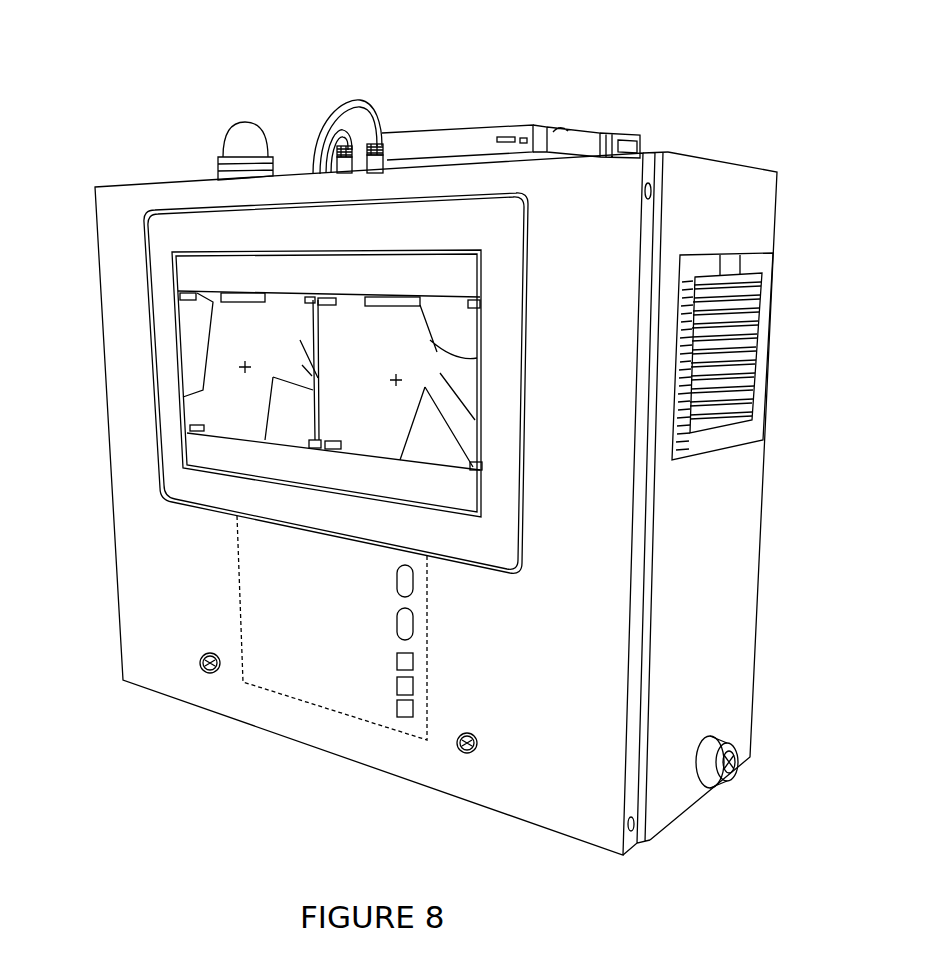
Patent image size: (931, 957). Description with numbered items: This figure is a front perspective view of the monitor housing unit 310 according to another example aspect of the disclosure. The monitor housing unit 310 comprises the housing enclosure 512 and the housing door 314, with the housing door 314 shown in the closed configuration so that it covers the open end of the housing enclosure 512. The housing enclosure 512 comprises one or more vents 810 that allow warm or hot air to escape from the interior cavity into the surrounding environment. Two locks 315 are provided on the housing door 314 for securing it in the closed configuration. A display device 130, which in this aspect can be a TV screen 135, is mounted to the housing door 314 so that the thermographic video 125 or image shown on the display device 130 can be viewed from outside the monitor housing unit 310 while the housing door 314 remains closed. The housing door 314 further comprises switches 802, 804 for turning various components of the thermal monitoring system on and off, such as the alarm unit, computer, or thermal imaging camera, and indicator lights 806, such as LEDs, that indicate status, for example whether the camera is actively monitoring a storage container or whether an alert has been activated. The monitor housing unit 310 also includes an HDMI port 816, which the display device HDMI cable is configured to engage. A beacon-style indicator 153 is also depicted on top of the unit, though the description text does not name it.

The monitor housing unit 310 is at (755, 84).
The beacon light 153 is at (234, 144).
The TV screen 135 is at (200, 285).
The display device 130 is at (158, 316).
The thermographic video 125 is at (212, 407).
The housing door 314 is at (130, 592).
The lock 315 is at (215, 672).
The switch 802 is at (413, 585).
The switch 804 is at (413, 628).
The indicator lights 806 is at (413, 663).
The vent 810 is at (718, 345).
The housing enclosure 512 is at (745, 570).
The HDMI port 816 is at (738, 758).